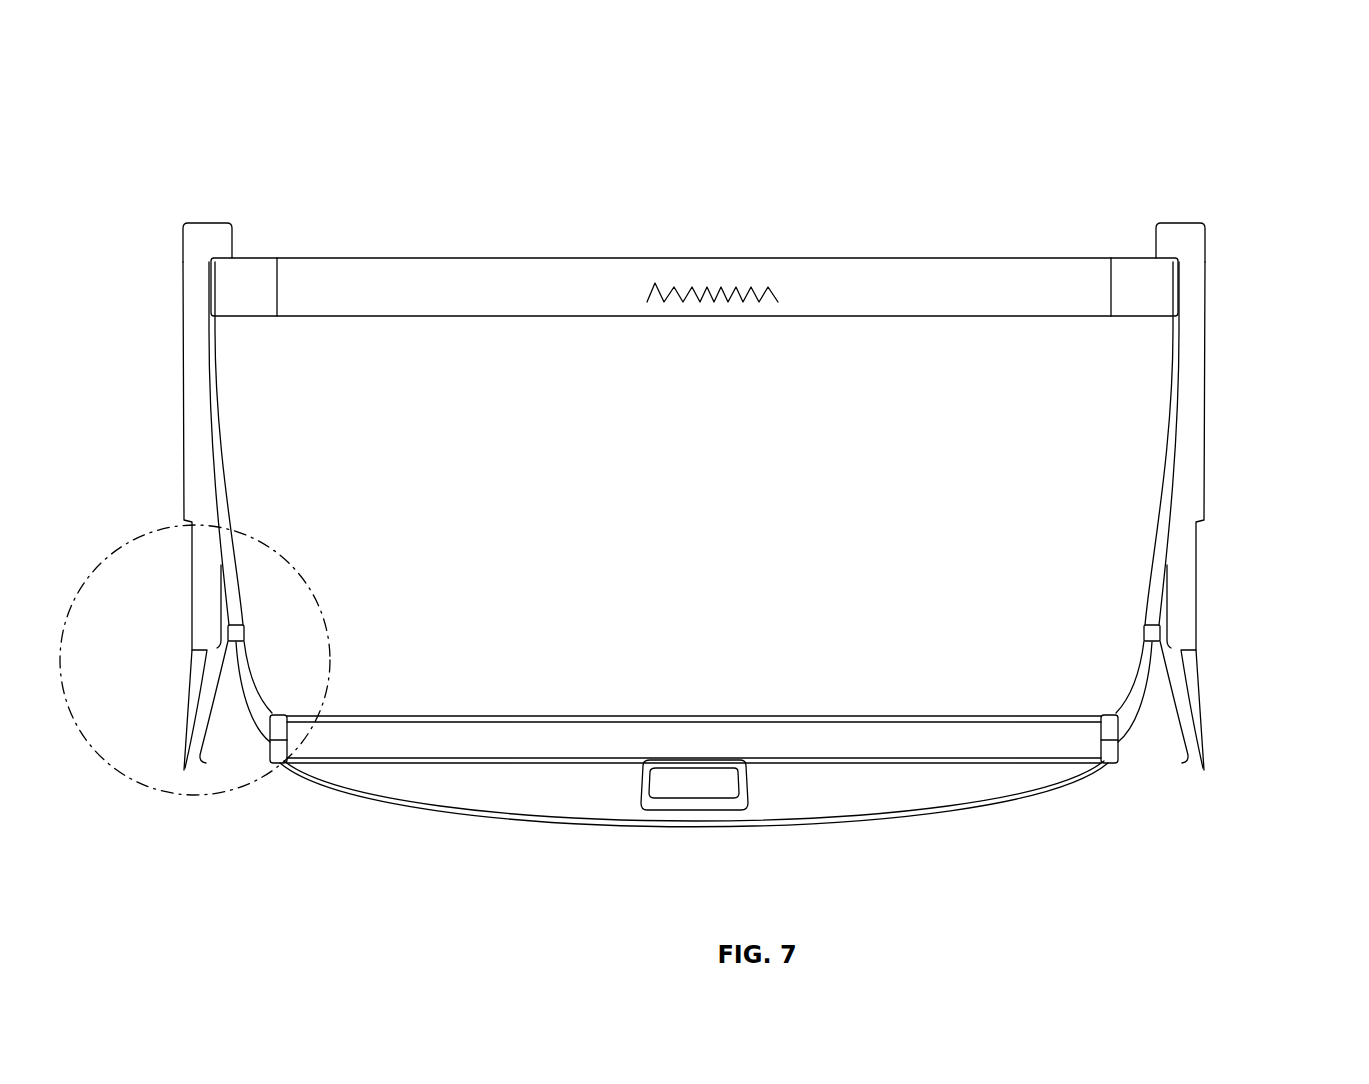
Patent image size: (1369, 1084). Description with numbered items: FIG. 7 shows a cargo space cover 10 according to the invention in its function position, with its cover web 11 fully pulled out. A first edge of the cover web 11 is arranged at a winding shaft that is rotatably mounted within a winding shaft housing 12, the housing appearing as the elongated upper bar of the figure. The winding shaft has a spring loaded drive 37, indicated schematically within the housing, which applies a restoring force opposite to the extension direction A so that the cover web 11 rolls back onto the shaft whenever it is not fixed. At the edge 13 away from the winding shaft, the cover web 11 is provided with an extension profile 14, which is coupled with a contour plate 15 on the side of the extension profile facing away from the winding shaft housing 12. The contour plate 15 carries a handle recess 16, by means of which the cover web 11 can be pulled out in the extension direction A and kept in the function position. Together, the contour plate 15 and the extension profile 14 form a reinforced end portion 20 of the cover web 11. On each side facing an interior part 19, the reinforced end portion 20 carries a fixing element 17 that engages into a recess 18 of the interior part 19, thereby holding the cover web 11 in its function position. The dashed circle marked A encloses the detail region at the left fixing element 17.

The cargo space cover 10 is at (937, 210).
The cover web 11 is at (503, 487).
The winding shaft housing 12 is at (478, 284).
The edge away from a winding shaft 13 is at (887, 723).
The extension profile 14 is at (948, 741).
The contour plate 15 is at (548, 790).
The handle recess 16 is at (700, 782).
The fixing element 17 is at (232, 679).
The recess 18 is at (240, 598).
The interior part 19 is at (173, 392).
The reinforced end portion 20 is at (1253, 715).
The spring loaded drive 37 is at (714, 281).
The extension direction A is at (128, 540).